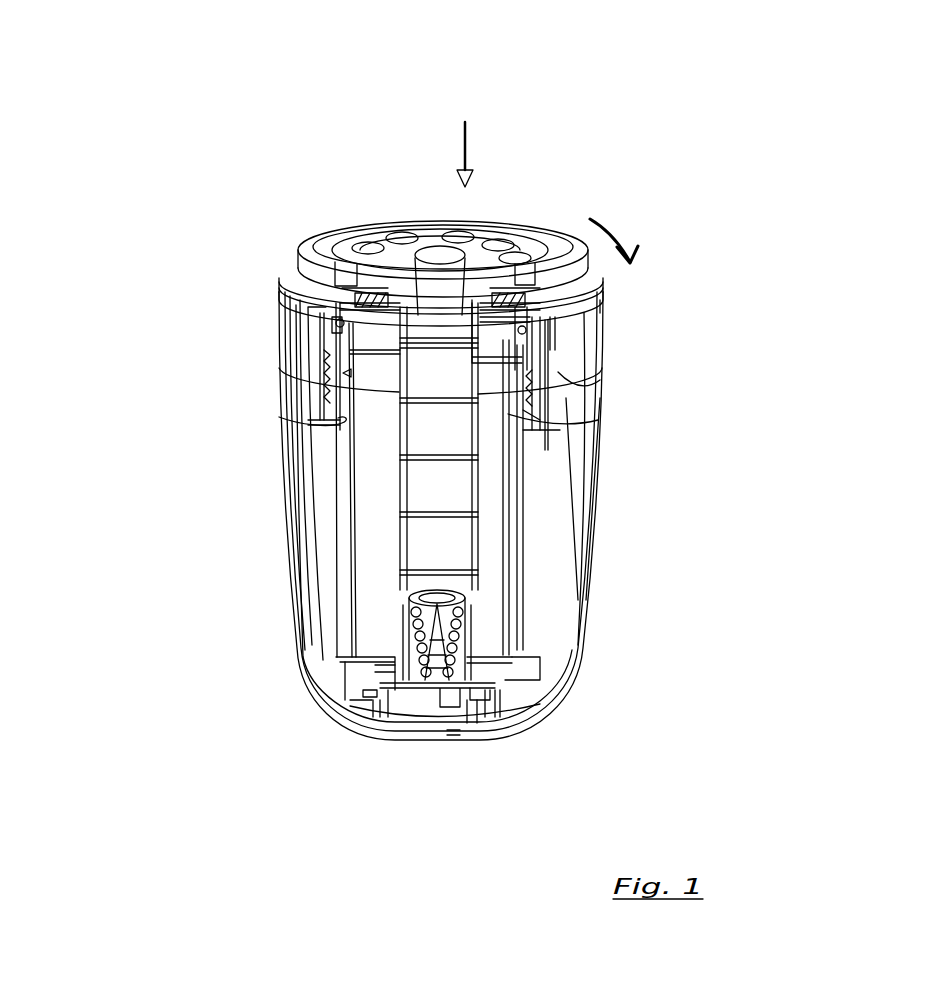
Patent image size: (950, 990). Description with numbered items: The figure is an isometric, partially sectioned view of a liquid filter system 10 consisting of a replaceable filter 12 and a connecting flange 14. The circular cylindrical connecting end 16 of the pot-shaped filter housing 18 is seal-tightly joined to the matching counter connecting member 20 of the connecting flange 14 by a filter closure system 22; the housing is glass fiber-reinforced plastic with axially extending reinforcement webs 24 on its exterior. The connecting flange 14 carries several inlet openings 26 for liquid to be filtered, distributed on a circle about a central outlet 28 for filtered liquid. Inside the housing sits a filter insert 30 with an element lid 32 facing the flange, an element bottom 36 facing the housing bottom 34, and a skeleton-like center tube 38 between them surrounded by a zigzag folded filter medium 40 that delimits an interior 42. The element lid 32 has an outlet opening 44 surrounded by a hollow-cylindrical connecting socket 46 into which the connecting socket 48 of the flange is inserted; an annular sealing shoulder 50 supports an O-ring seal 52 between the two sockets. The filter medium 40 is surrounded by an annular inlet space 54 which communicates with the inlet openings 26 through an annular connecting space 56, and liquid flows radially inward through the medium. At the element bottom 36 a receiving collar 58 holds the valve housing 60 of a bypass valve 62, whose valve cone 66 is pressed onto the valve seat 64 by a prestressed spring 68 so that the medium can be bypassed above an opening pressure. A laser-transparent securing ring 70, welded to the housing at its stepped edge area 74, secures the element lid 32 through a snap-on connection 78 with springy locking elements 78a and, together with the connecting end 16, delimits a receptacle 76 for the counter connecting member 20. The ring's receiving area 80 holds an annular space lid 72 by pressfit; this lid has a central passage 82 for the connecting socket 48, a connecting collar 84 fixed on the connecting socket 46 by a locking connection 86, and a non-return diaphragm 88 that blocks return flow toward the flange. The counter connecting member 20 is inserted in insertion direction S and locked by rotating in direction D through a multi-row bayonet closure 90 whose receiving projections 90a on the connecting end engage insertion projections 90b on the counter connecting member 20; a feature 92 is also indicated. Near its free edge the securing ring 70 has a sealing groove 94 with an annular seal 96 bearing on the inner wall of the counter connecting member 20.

The liquid filter system 10 is at (230, 158).
The replaceable filter 12 is at (208, 578).
The connecting flange 14 is at (253, 252).
The connecting end 16 is at (290, 345).
The filter housing 18 is at (306, 634).
The counter connecting member 20 is at (330, 386).
The filter closure system 22 is at (300, 306).
The reinforcement webs 24 is at (282, 495).
The inlet openings 26 is at (345, 230).
The outlet 28 is at (433, 232).
The filter insert 30 is at (360, 690).
The element lid 32 is at (530, 393).
The bottom 34 is at (490, 700).
The element bottom 36 is at (520, 688).
The center tube 38 is at (485, 548).
The filter medium 40 is at (495, 575).
The interior 42 is at (437, 488).
The outlet opening 44 is at (500, 473).
The connecting socket 46 is at (497, 232).
The connecting socket 48 is at (427, 232).
The annular sealing shoulder 50 is at (400, 232).
The O-ring seal 52 is at (388, 232).
The annular inlet space 54 is at (485, 607).
The annular connecting space 56 is at (545, 355).
The receiving collar 58 is at (505, 716).
The valve housing 60 is at (483, 690).
The bypass valve 62 is at (418, 714).
The valve seat 64 is at (369, 628).
The valve cone 66 is at (437, 612).
The spring 68 is at (402, 665).
The securing ring 70 is at (345, 410).
The annular space lid 72 is at (532, 255).
The edge area 74 is at (345, 428).
The receptacle 76 is at (520, 455).
The snap-on connection 78 is at (330, 370).
The locking elements 78a is at (330, 379).
The receiving area 80 is at (580, 288).
The central passage 82 is at (490, 245).
The connecting collar 84 is at (560, 342).
The locking connection 86 is at (300, 330).
The non-return diaphragm 88 is at (305, 258).
The bayonet closure 90 is at (528, 432).
The receiving projections 90a is at (525, 418).
The insertion projections 90b is at (560, 375).
The latch post 92 is at (565, 330).
The sealing groove 94 is at (302, 282).
The annular seal 96 is at (300, 288).
The insertion direction S is at (467, 150).
The rotational direction D is at (618, 230).